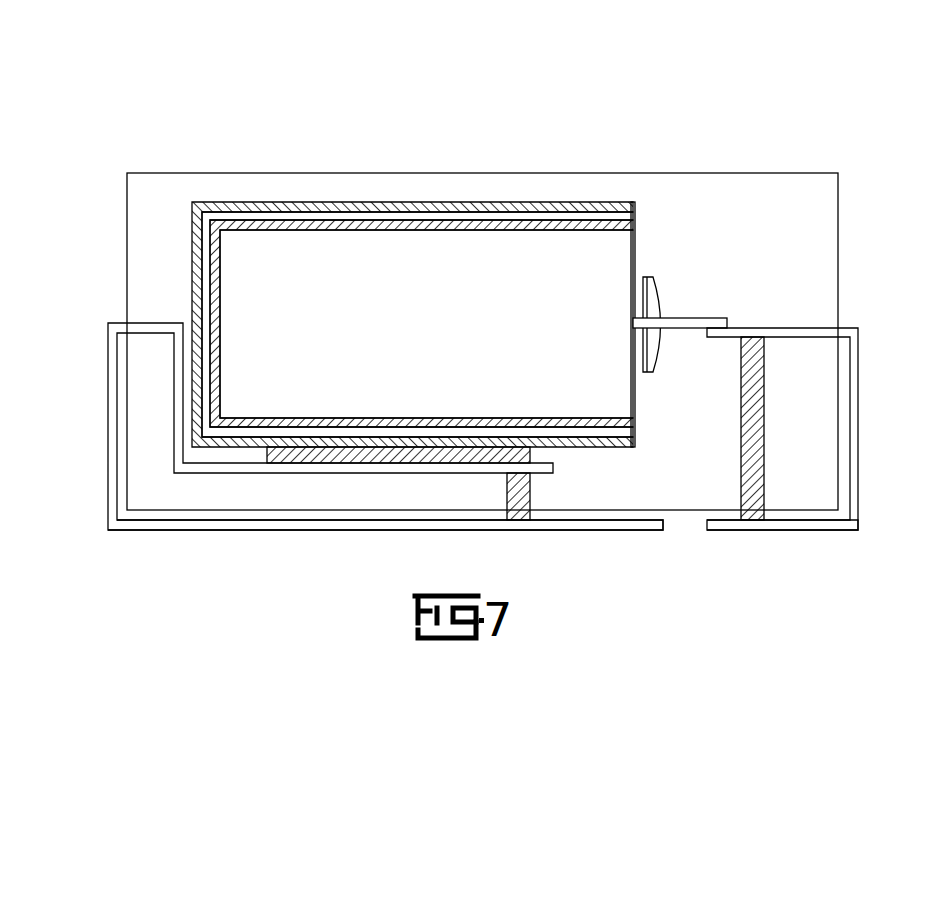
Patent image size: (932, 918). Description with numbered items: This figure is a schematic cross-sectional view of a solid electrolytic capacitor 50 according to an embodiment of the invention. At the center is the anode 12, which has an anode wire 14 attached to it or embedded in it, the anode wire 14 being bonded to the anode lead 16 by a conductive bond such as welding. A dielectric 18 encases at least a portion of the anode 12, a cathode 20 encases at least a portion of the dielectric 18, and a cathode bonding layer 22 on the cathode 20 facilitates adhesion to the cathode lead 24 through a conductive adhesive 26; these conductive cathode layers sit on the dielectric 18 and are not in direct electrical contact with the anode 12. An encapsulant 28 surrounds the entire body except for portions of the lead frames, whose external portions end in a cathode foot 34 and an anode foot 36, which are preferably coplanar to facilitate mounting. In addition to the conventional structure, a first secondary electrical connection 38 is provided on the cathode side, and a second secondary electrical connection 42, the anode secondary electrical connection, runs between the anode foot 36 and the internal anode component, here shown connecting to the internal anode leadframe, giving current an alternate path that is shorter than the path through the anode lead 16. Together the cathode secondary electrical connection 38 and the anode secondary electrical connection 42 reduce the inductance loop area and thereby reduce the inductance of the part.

The solid electrolytic capacitor 50 is at (377, 103).
The encapsulant 28 is at (816, 230).
The cathode bonding layer 22 is at (405, 205).
The cathode 20 is at (498, 215).
The dielectric 18 is at (607, 222).
The anode 12 is at (405, 350).
The anode wire 14 is at (686, 318).
The anode lead 16 is at (862, 450).
The anode foot 36 is at (810, 531).
The second secondary electrical connection 42 is at (748, 452).
The cathode lead 24 is at (107, 447).
The cathode foot 34 is at (172, 531).
The conductive adhesive 26 is at (345, 458).
The first secondary electrical connection 38 is at (520, 500).